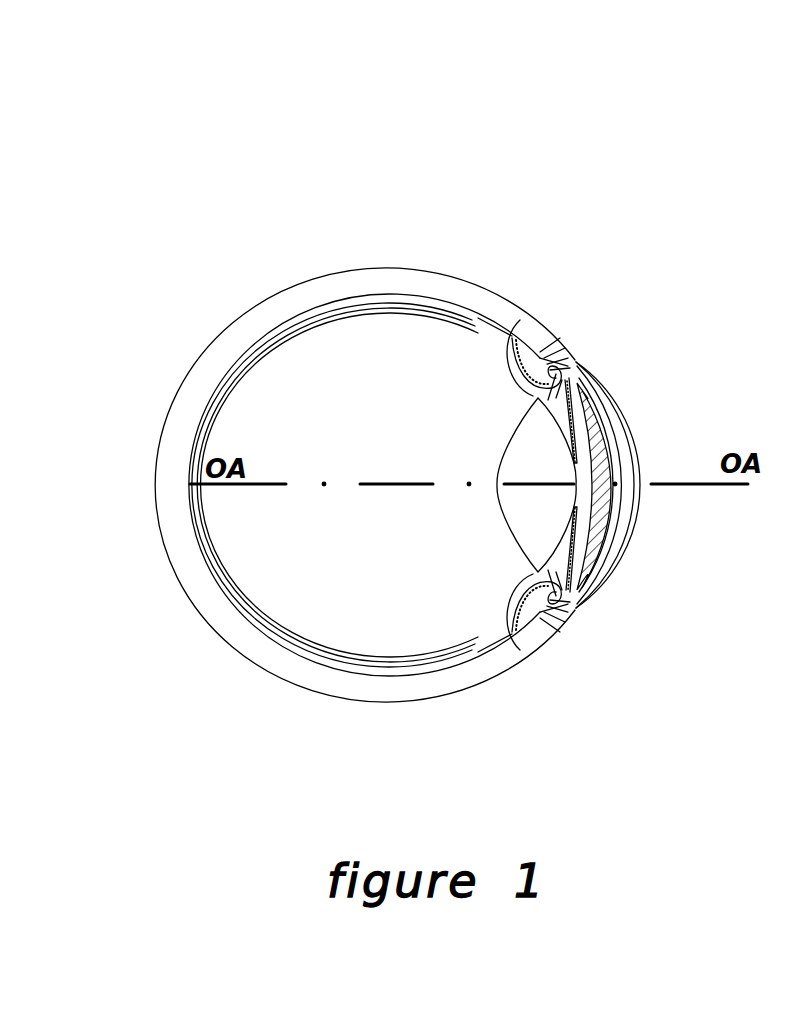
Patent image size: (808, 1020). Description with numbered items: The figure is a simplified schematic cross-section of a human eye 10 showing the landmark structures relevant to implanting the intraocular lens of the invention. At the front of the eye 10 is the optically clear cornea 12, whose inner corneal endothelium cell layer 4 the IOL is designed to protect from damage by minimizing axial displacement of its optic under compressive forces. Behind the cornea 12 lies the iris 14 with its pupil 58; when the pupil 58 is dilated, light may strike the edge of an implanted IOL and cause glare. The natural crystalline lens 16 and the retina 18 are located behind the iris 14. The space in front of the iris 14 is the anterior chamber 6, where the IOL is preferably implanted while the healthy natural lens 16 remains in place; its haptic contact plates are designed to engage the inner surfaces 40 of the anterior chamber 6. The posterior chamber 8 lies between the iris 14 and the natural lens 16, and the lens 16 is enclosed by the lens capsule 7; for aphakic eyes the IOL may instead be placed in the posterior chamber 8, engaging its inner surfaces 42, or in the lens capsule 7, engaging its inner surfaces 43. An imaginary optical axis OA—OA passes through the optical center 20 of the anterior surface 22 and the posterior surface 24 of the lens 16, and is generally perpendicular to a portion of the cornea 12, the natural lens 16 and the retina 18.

The eye 10 is at (604, 343).
The retina 18 is at (385, 298).
The natural crystalline lens 16 is at (529, 434).
The inner surfaces in lens capsule 43 is at (513, 352).
The inner surfaces in posterior chamber 42 is at (574, 358).
The cornea 12 is at (632, 444).
The corneal endothelium cell layer 4 is at (628, 420).
The anterior surface 22 is at (598, 501).
The inner surfaces in anterior chamber 40 is at (590, 366).
The posterior chamber 8 is at (597, 400).
The optical center 20 is at (610, 463).
The pupil 58 is at (593, 521).
The anterior chamber 6 is at (600, 543).
The iris 14 is at (605, 555).
The lens capsule 7 is at (593, 587).
The posterior surface 24 is at (540, 557).